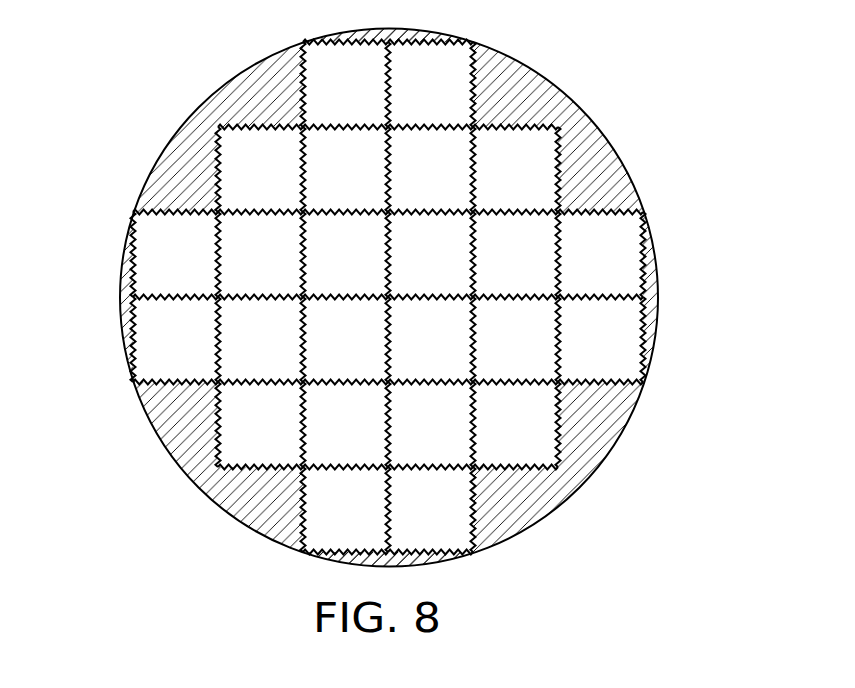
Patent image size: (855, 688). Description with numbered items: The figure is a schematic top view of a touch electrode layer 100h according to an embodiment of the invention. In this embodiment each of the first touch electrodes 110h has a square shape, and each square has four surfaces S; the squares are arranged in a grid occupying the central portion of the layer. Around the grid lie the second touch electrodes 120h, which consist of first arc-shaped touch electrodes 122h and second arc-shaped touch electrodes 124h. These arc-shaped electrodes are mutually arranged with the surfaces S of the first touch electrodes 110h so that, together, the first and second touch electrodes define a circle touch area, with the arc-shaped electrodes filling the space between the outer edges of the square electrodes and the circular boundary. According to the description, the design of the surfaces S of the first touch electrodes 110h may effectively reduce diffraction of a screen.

The touch electrode layer 100h is at (778, 608).
The first touch electrodes 110h is at (399, 297).
The second touch electrodes 120h is at (675, 15).
The first arc-shaped touch electrodes 122h is at (580, 118).
The second arc-shaped touch electrodes 124h is at (421, 33).
The surfaces S is at (228, 246).